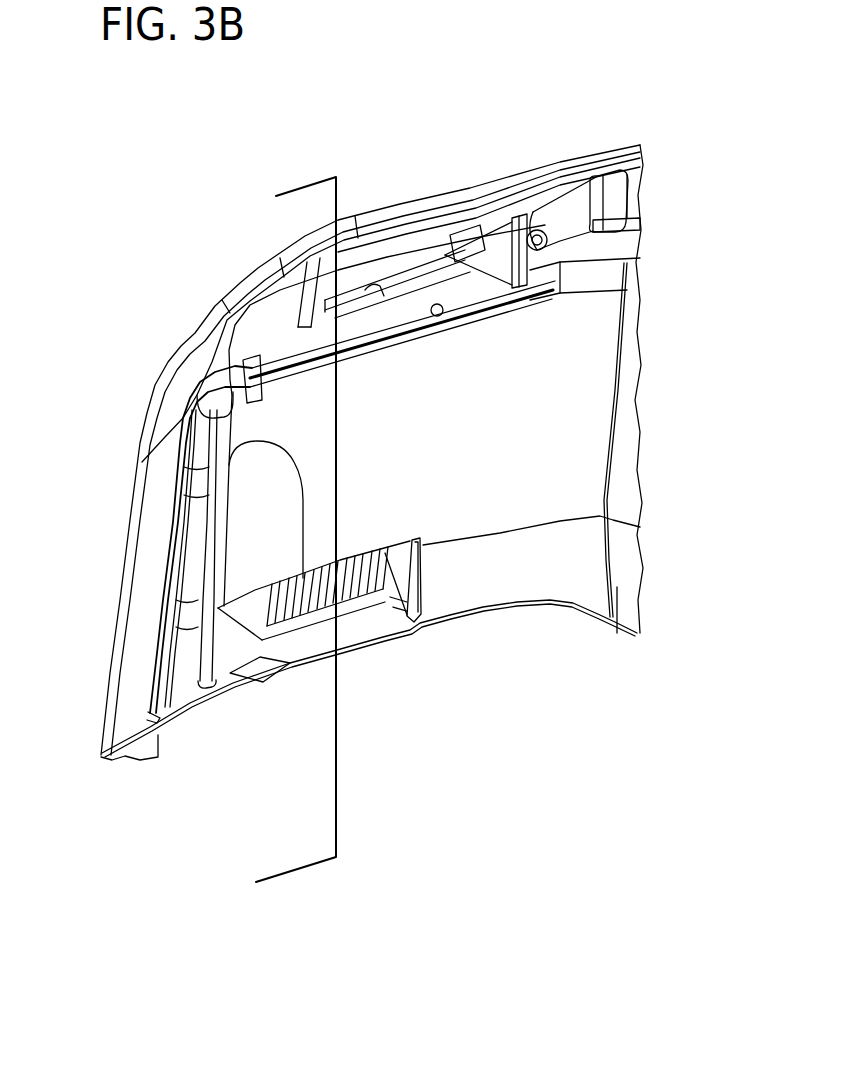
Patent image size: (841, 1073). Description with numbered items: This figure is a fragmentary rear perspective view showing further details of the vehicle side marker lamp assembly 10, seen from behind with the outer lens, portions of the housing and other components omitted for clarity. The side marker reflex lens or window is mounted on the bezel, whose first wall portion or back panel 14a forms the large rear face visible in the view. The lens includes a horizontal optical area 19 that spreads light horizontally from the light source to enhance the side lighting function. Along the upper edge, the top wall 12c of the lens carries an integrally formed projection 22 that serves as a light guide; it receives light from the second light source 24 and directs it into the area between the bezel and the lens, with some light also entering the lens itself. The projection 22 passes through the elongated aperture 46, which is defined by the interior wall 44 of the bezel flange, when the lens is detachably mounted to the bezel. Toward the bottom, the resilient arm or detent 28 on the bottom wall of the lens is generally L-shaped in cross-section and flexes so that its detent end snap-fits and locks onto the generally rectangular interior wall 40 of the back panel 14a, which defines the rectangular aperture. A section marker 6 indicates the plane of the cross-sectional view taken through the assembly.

The section line 6 is at (272, 541).
The lamp assembly 10 is at (240, 285).
The top wall 12c is at (477, 292).
The first wall portion or back panel 14a is at (420, 454).
The horizontal optical area 19 is at (280, 628).
The projection 22 is at (467, 243).
The second light source 24 is at (550, 237).
The resilient arm or detent 28 is at (385, 628).
The interior wall 40 is at (400, 550).
The interior wall 44 is at (437, 313).
The elongated aperture 46 is at (230, 335).